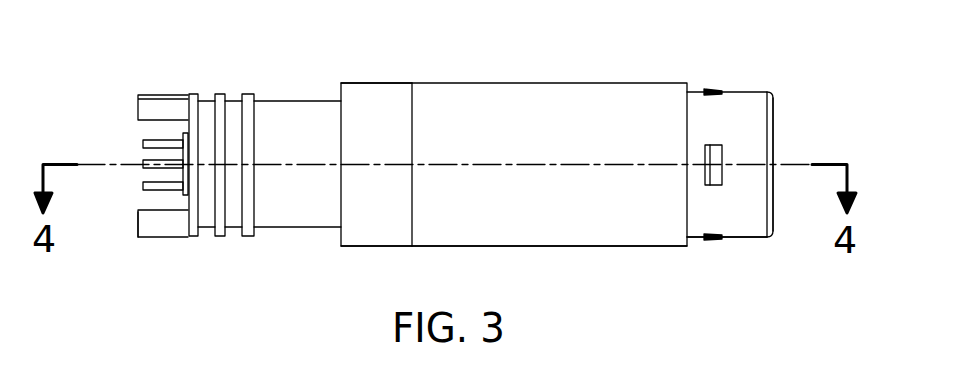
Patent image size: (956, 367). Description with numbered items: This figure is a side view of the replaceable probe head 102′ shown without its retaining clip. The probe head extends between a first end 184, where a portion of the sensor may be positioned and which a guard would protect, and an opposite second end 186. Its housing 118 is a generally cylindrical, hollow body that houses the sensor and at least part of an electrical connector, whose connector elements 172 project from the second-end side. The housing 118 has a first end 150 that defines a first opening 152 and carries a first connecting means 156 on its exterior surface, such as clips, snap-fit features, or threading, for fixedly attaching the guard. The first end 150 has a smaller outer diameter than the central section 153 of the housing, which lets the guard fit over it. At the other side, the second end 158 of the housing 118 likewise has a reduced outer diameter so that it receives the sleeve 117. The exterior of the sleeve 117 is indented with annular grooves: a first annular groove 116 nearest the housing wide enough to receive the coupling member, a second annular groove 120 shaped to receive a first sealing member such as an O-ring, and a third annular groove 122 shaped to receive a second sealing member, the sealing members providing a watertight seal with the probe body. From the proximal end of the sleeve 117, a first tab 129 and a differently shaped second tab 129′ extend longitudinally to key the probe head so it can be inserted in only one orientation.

The connector assembly 102′ is at (556, 62).
The first annular groove 116 is at (298, 223).
The sleeve 117 is at (377, 243).
The housing 118 is at (587, 241).
The second annular groove 120 is at (233, 100).
The third annular groove 122 is at (206, 98).
The first tab 129 is at (172, 232).
The second tab 129′ is at (162, 98).
The first end 150 is at (745, 95).
The first opening 152 is at (775, 108).
The central section 153 is at (498, 224).
The first connecting means 156 is at (712, 242).
The second end 158 is at (427, 86).
The contact pins 172 is at (143, 143).
The first end 184 is at (770, 240).
The second end 186 is at (138, 239).